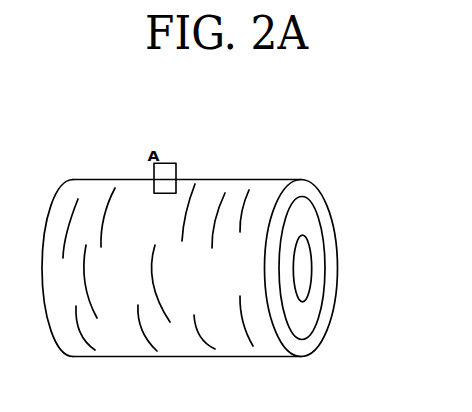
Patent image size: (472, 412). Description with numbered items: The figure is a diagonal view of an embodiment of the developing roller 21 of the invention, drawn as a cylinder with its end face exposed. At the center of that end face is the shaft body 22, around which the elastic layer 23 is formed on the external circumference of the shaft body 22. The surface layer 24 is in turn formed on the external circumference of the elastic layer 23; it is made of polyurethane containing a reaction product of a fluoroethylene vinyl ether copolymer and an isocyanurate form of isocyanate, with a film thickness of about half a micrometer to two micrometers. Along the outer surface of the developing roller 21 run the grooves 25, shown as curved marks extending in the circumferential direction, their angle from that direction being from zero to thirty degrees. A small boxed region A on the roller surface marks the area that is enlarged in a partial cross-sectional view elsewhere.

The developing roller 21 is at (298, 149).
The shaft body 22 is at (302, 270).
The elastic layer 23 is at (302, 325).
The surface layer 24 is at (325, 219).
The grooves 25 is at (205, 343).